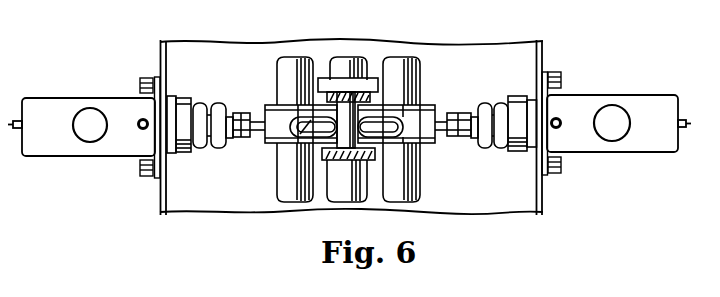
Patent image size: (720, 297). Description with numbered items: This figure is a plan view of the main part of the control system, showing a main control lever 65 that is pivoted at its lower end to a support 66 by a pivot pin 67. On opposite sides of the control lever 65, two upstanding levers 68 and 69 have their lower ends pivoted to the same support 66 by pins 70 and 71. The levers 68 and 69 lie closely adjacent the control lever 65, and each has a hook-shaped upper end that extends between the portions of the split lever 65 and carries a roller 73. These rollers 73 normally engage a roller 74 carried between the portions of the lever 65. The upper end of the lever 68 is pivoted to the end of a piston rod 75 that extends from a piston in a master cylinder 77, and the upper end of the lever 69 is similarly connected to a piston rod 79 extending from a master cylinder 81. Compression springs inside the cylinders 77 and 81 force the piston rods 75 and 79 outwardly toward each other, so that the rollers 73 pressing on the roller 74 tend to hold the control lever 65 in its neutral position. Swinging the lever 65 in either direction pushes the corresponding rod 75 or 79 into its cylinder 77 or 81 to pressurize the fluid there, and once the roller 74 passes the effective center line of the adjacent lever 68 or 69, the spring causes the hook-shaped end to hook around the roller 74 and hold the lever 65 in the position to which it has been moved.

The main control lever 65 is at (320, 88).
The support 66 is at (403, 41).
The pivot pin 67 is at (338, 70).
The upstanding lever 68 is at (268, 106).
The upstanding lever 69 is at (424, 107).
The pin 70 is at (292, 73).
The pin 71 is at (404, 73).
The roller 73 is at (312, 144).
The roller 74 is at (350, 166).
The piston rod 75 is at (269, 143).
The master cylinder 77 is at (78, 98).
The piston rod 79 is at (444, 135).
The master cylinder 81 is at (593, 96).